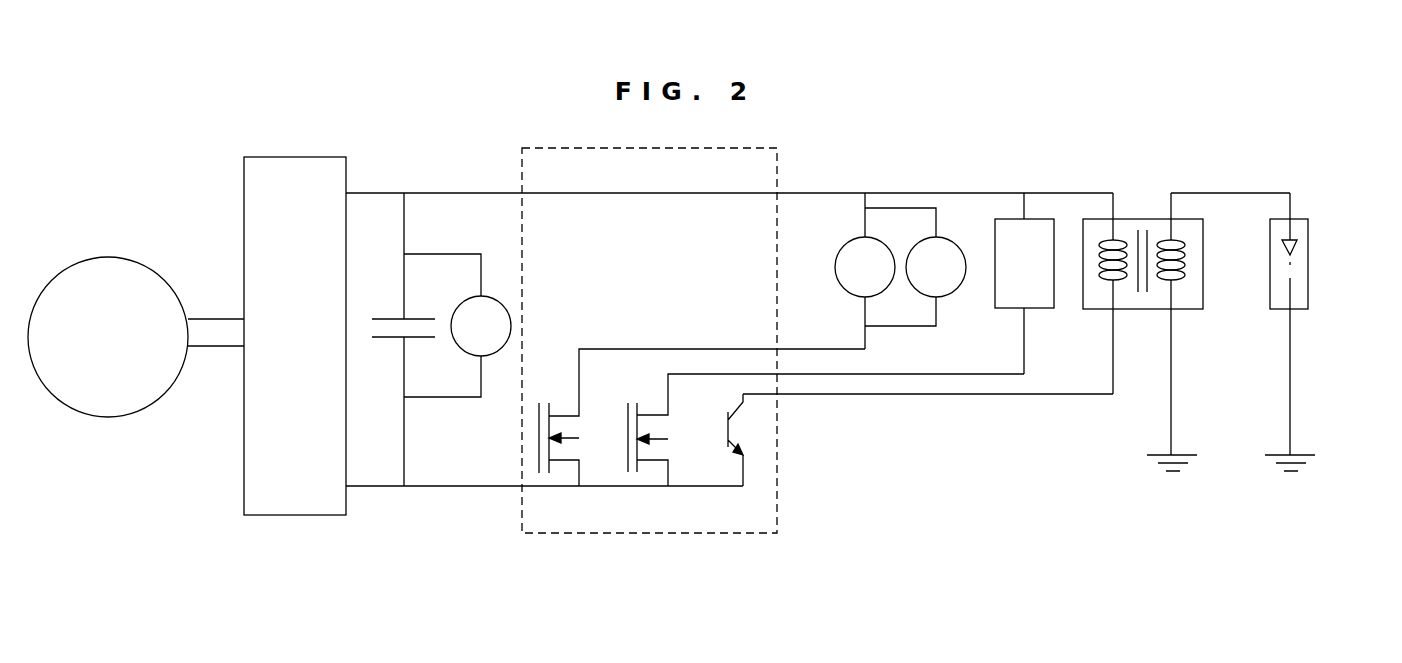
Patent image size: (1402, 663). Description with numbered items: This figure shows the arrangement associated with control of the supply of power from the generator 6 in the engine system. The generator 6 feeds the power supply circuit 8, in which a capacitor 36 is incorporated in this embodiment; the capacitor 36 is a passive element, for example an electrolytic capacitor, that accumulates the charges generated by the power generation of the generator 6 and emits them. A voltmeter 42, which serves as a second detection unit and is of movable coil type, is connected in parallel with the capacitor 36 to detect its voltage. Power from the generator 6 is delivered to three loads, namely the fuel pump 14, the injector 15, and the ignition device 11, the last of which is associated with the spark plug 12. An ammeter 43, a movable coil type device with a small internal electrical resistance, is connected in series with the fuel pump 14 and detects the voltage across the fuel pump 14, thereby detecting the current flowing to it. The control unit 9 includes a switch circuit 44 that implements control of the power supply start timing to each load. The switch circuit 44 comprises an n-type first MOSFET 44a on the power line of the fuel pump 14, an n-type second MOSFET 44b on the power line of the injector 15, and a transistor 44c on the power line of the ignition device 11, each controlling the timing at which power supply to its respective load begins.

The generator 6 is at (98, 418).
The power supply circuit 8 is at (292, 516).
The capacitor 36 is at (381, 307).
The voltmeter 42 is at (487, 325).
The control unit 9 is at (700, 535).
The switch circuit 44 is at (826, 412).
The first MOSFET 44a is at (550, 358).
The second MOSFET 44b is at (640, 385).
The transistor 44c is at (728, 397).
The fuel pump 14 is at (864, 266).
The ammeter 43 is at (952, 243).
The injector 15 is at (1037, 263).
The ignition device 11 is at (1148, 193).
The spark plug 12 is at (1323, 255).